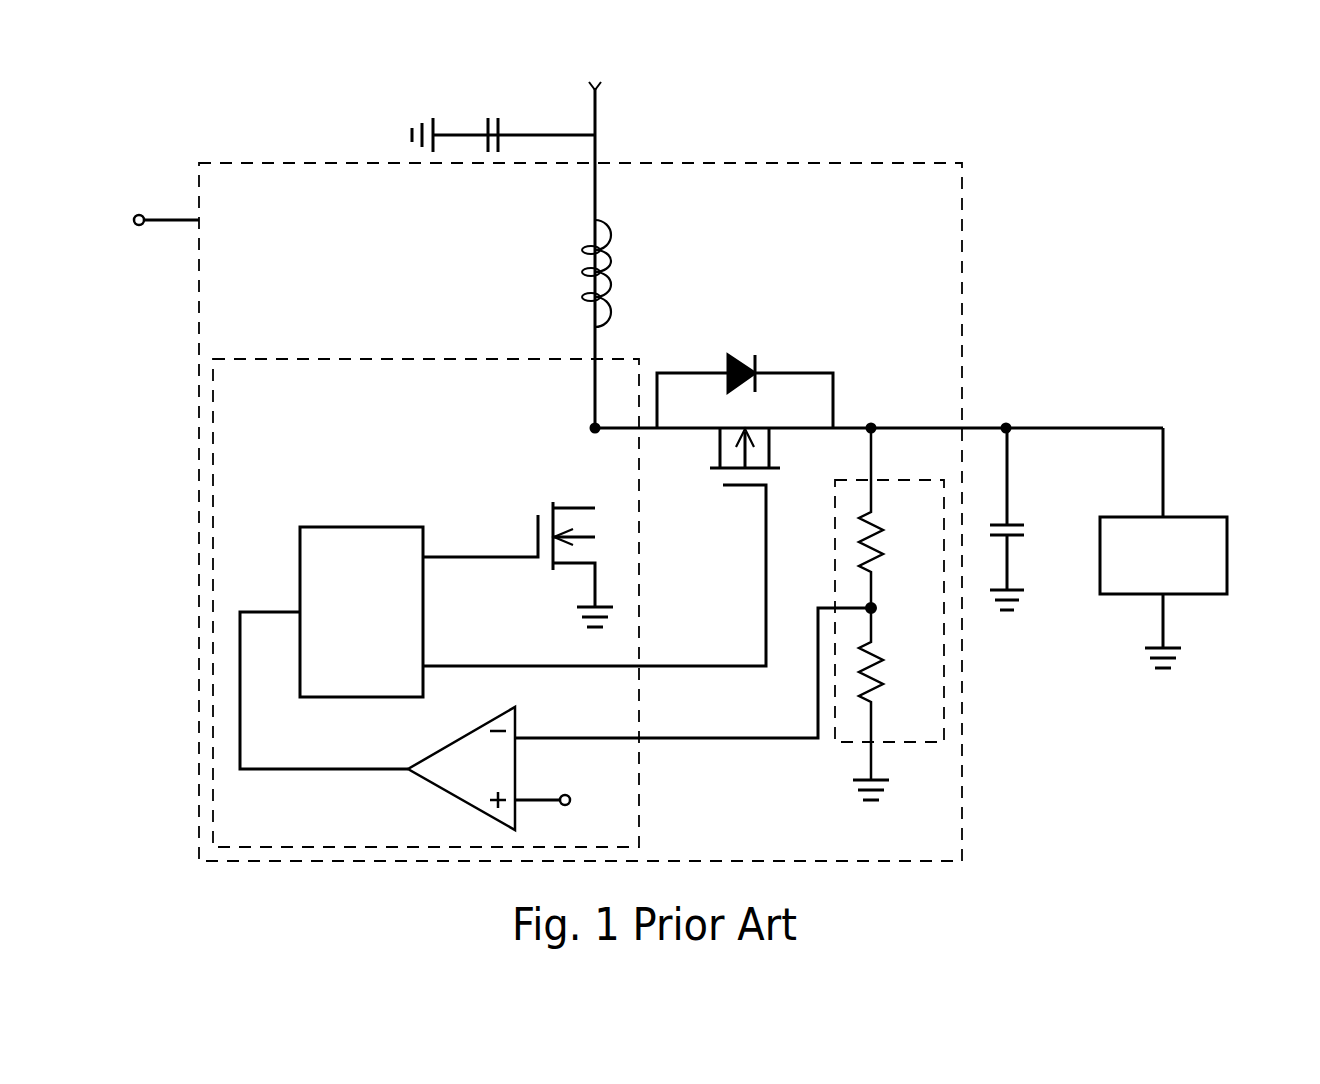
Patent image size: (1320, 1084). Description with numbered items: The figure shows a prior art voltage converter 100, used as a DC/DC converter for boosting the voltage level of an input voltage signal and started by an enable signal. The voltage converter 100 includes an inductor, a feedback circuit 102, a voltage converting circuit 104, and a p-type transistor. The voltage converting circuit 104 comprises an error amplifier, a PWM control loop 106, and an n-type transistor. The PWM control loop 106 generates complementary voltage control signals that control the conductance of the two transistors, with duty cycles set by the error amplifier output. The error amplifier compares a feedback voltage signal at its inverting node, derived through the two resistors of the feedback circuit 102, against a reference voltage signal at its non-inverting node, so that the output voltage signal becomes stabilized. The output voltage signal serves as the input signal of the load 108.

The voltage converter 100 is at (1033, 197).
The feedback circuit 102 is at (944, 707).
The voltage converting circuit 104 is at (640, 600).
The PWM control loop 106 is at (358, 527).
The load 108 is at (1227, 553).